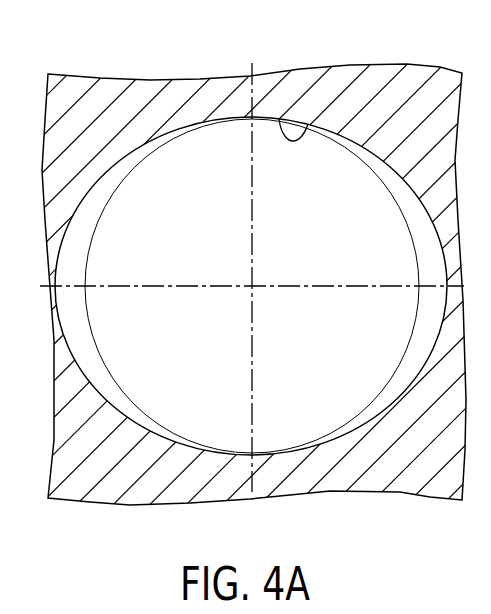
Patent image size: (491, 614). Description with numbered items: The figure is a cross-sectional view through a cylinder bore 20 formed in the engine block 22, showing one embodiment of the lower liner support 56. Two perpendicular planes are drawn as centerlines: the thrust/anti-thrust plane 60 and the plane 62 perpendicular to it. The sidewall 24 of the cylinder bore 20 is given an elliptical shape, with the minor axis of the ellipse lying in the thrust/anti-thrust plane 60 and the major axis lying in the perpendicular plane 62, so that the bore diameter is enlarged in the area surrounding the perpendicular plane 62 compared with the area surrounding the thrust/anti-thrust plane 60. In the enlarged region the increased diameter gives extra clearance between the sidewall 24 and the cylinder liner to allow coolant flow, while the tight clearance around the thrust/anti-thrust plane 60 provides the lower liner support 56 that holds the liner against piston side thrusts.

The cylinder bore 20 is at (158, 190).
The engine block 22 is at (112, 85).
The sidewall 24 is at (313, 125).
The lower liner support 56 is at (74, 377).
The thrust/anti-thrust plane 60 is at (255, 230).
The plane perpendicular to the thrust/anti-thrust plane 62 is at (300, 296).